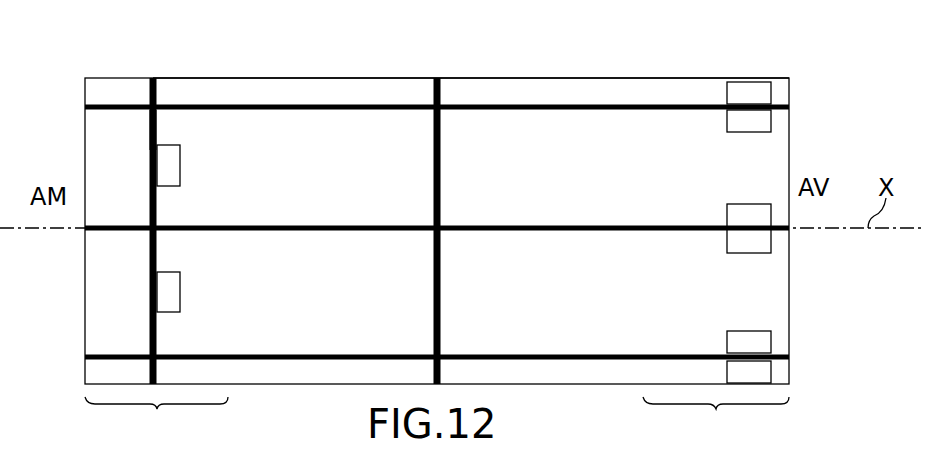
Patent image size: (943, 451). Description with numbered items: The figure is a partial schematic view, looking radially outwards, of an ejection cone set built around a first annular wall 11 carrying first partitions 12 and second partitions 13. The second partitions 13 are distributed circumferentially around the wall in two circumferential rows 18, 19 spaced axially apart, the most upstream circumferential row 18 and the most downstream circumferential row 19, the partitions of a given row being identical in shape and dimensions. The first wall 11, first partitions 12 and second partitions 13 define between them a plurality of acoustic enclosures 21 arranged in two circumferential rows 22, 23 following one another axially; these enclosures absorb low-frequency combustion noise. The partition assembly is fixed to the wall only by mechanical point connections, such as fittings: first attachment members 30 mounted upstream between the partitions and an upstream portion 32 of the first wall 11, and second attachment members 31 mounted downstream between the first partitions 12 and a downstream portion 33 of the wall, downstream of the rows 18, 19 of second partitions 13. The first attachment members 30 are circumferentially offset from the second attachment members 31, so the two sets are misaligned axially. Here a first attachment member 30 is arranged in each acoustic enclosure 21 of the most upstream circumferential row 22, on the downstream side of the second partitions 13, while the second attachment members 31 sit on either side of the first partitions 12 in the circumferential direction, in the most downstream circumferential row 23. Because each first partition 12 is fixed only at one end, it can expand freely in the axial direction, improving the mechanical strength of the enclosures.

The first annular wall 11 is at (97, 327).
The first partitions 12 is at (291, 100).
The second partitions 13 is at (142, 127).
The most upstream circumferential row 18 is at (150, 72).
The most downstream circumferential row 19 is at (434, 70).
The acoustic enclosures 21 is at (306, 187).
The most upstream circumferential row of acoustic enclosures 22 is at (324, 70).
The most downstream circumferential row of acoustic enclosures 23 is at (610, 70).
The first attachment members 30 is at (168, 168).
The second attachment members 31 is at (765, 120).
The upstream portion 32 is at (156, 419).
The downstream portion 33 is at (716, 419).